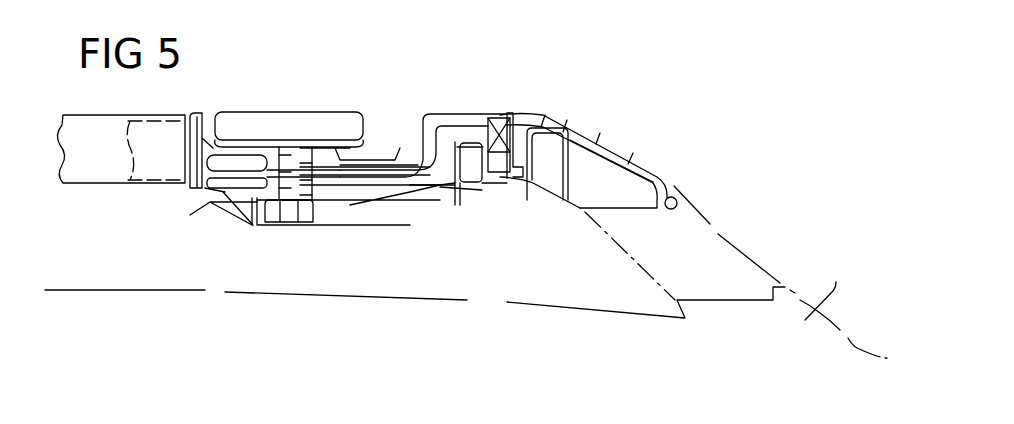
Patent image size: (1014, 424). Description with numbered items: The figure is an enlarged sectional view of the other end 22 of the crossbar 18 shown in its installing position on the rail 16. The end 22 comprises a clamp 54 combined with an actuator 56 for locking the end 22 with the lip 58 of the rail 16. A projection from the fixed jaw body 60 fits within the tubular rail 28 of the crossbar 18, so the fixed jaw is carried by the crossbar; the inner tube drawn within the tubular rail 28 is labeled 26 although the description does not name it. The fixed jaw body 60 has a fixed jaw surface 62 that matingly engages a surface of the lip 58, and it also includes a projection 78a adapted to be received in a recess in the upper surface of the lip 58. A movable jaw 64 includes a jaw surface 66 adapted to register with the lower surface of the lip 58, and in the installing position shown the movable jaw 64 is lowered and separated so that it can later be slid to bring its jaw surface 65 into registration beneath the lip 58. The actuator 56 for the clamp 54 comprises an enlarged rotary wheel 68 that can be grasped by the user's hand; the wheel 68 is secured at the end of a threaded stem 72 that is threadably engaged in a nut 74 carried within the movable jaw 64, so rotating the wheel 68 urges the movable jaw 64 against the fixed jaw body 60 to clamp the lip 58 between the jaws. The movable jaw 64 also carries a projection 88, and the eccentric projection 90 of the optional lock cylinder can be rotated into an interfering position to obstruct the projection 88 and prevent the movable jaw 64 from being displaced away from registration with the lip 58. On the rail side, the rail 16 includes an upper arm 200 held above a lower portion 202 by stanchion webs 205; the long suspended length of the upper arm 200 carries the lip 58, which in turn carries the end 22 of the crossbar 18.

The rail 16 is at (620, 152).
The crossbar 18 is at (348, 82).
The other end 22 is at (455, 98).
The inner tube 26 is at (128, 190).
The tubular rail 28 is at (93, 132).
The clamp 54 is at (452, 213).
The actuator 56 is at (251, 102).
The lip 58 is at (500, 200).
The fixed jaw body 60 is at (502, 110).
The fixed jaw surface 62 is at (505, 124).
The movable jaw 64 is at (443, 198).
The jaw surface 65 is at (468, 195).
The jaw surface 66 is at (395, 134).
The rotary wheel 68 is at (300, 128).
The threaded stem 72 is at (215, 192).
The nut 74 is at (262, 226).
The projection 78a is at (578, 133).
The projection 88 is at (388, 117).
The eccentric projection 90 is at (347, 200).
The upper arm 200 is at (655, 178).
The lower portion 202 is at (466, 304).
The stanchion webs 205 is at (688, 228).